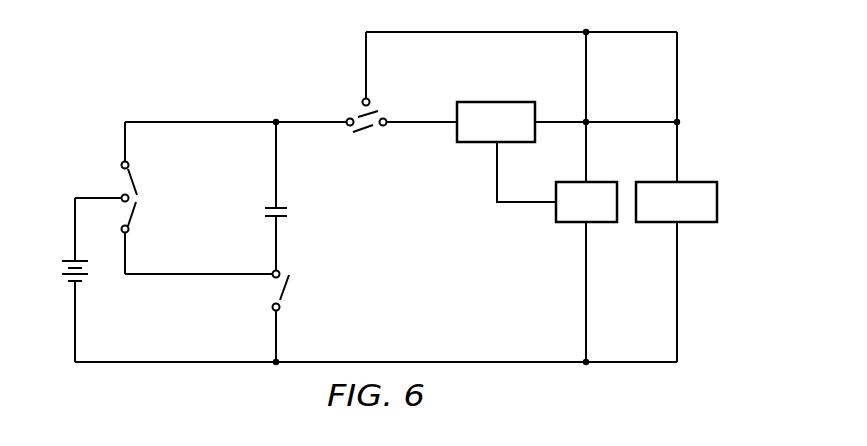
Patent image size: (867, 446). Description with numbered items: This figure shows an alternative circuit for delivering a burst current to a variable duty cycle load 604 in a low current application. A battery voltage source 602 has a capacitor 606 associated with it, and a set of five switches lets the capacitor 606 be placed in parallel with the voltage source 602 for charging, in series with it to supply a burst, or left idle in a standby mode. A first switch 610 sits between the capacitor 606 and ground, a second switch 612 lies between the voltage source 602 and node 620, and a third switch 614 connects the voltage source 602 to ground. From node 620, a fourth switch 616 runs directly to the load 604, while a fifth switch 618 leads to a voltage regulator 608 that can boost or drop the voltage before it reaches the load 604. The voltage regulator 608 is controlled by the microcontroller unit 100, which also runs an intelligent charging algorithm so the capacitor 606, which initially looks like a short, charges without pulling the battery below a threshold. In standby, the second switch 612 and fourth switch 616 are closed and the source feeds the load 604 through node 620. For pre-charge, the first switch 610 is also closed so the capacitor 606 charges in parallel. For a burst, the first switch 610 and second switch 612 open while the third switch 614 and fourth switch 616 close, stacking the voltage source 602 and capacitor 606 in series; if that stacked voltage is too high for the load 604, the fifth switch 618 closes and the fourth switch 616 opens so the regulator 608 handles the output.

The microcontroller unit 100 is at (566, 224).
The voltage source 602 is at (72, 259).
The variable duty cycle load 604 is at (708, 224).
The capacitor 606 is at (273, 204).
The voltage regulator 608 is at (485, 100).
The switch S1 610 is at (287, 292).
The switch S2 612 is at (133, 180).
The switch S3 614 is at (133, 213).
The switch S4 616 is at (358, 112).
The switch S5 618 is at (369, 127).
The node 620 is at (273, 118).